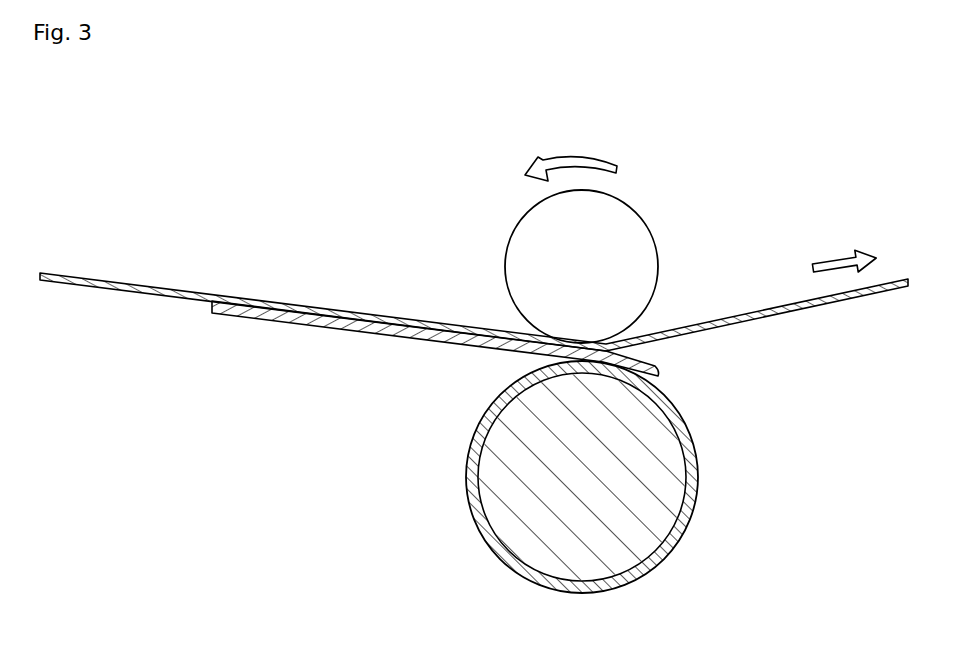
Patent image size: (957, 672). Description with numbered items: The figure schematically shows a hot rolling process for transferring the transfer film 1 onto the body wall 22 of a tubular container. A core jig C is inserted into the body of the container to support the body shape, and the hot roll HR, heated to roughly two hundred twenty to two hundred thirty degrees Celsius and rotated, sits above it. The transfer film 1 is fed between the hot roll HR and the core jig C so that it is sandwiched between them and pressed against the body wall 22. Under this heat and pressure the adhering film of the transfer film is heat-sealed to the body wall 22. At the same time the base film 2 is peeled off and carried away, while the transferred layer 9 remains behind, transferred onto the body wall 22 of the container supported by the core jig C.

The transfer film 1 is at (302, 282).
The base film 2 is at (764, 308).
The transferred layer 9 is at (396, 337).
The hot roll HR is at (590, 212).
The body wall 22 is at (693, 436).
The core jig C is at (655, 492).